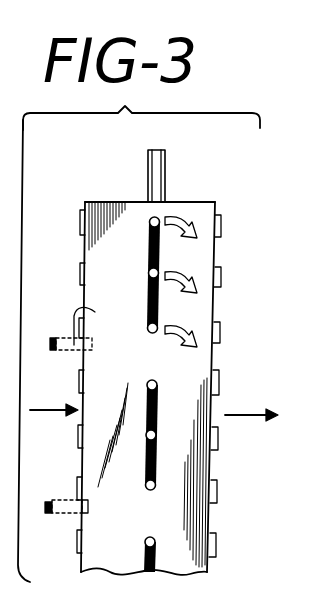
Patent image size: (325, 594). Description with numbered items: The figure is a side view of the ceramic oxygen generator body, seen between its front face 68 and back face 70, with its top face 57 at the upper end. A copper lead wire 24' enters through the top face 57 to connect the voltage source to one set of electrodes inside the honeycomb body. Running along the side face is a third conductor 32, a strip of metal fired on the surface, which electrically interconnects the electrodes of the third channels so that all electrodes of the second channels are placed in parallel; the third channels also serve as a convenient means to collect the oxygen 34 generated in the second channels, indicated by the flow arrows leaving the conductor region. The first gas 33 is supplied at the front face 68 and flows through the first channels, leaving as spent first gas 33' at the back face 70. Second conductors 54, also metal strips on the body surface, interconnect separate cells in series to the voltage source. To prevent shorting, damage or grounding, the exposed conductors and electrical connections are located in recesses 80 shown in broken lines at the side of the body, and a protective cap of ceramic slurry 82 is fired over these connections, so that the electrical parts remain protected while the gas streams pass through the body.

The copper lead wire 24' is at (193, 169).
The third conductor 32 is at (158, 305).
The first gas 33 is at (54, 436).
The spent first gas 33' is at (251, 450).
The oxygen 34 is at (193, 216).
The second conductor 54 is at (57, 562).
The top face 57 is at (125, 202).
The front face 68 is at (80, 247).
The back face 70 is at (222, 297).
The recess 80 is at (117, 513).
The ceramic slurry cap 82 is at (46, 506).